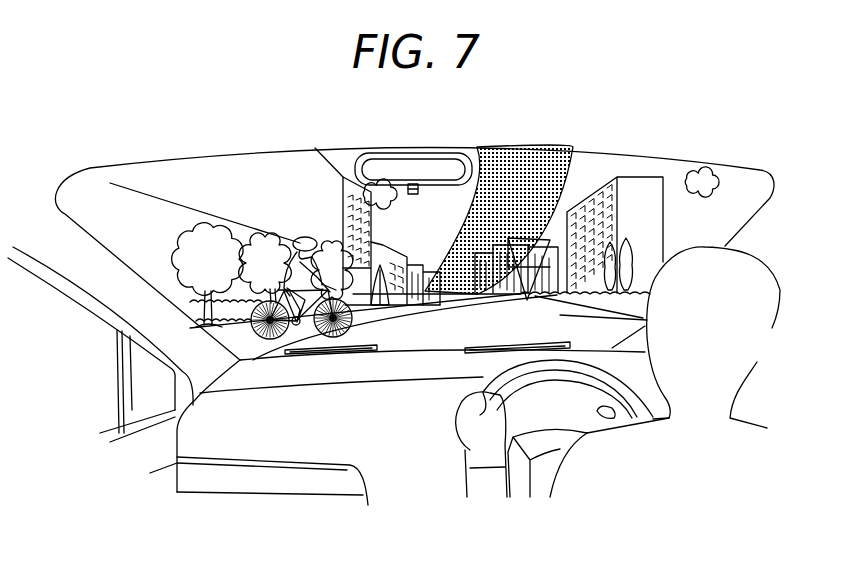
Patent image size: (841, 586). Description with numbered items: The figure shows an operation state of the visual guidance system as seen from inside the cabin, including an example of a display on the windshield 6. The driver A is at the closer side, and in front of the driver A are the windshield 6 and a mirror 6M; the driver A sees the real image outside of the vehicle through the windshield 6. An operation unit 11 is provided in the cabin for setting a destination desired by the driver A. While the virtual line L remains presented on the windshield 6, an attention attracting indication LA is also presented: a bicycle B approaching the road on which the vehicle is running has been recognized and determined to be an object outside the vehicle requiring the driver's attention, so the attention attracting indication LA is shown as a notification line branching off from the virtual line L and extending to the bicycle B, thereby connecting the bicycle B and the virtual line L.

The windshield 6 is at (655, 156).
The mirror 6M is at (402, 167).
The virtual line L is at (527, 157).
The attention attracting indication LA is at (462, 258).
The bicycle B is at (305, 243).
The driver A is at (718, 268).
The operation unit 11 is at (480, 393).